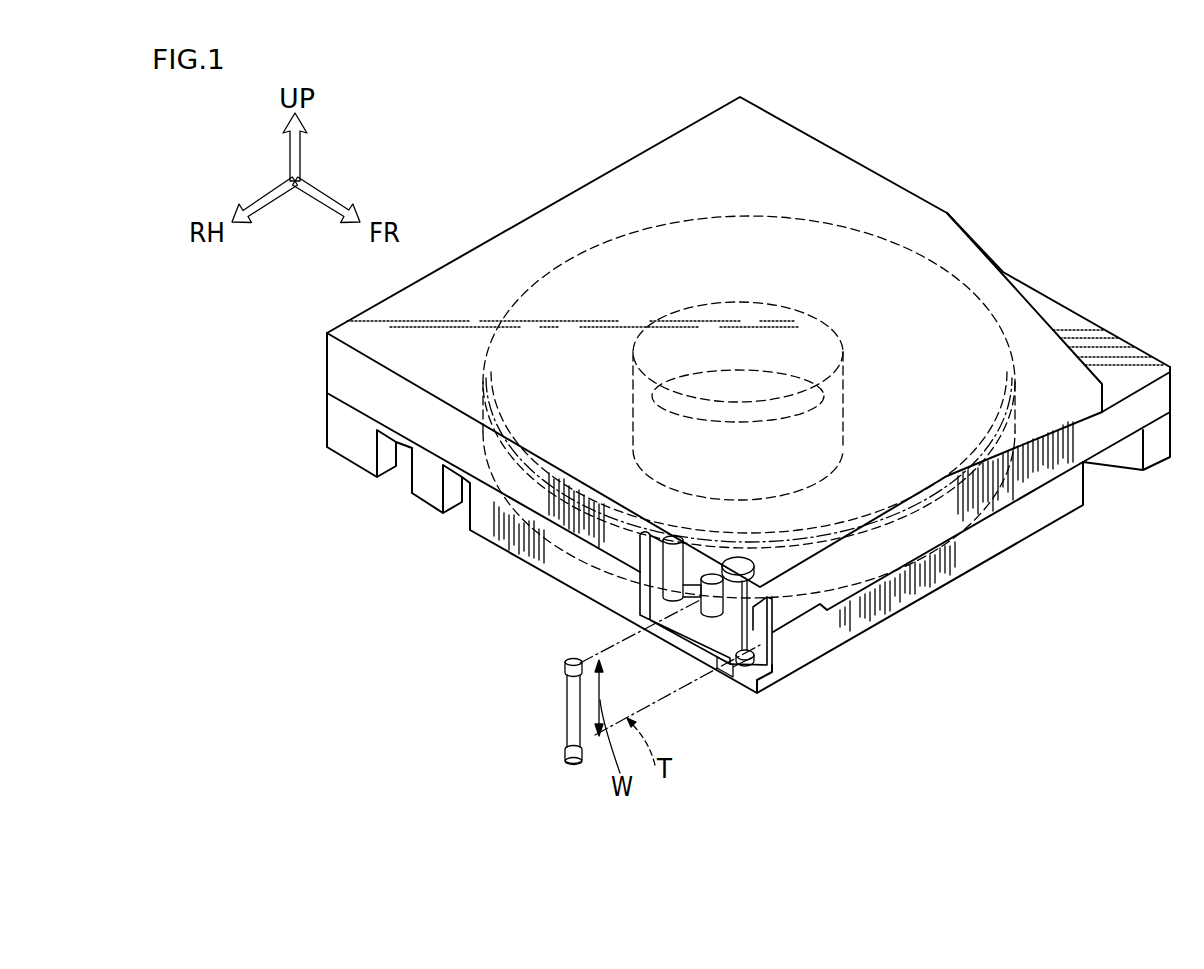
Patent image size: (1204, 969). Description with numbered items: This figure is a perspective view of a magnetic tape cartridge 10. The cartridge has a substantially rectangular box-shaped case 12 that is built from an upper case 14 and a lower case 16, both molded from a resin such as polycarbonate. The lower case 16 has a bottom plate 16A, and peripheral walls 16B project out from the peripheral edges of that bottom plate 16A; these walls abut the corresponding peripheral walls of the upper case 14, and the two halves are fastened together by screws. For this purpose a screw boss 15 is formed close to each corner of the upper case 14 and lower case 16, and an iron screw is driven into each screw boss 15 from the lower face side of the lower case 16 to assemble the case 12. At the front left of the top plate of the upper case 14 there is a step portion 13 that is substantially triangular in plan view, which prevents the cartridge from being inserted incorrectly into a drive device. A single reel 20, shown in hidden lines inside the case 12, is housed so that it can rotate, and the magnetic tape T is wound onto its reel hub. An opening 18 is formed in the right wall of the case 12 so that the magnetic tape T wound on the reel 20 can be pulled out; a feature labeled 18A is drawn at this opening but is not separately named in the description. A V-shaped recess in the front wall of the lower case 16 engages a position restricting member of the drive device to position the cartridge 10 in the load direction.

The magnetic tape cartridge 10 is at (895, 161).
The case 12 is at (622, 193).
The step portion 13 is at (729, 556).
The upper case 14 is at (713, 633).
The screw boss 15 is at (678, 636).
The lower case 16 is at (572, 690).
The bottom plate 16A is at (565, 668).
The peripheral walls 16B is at (566, 661).
The opening 18 is at (640, 592).
The pin holder cylinder 18A is at (643, 537).
The reel 20 is at (762, 215).